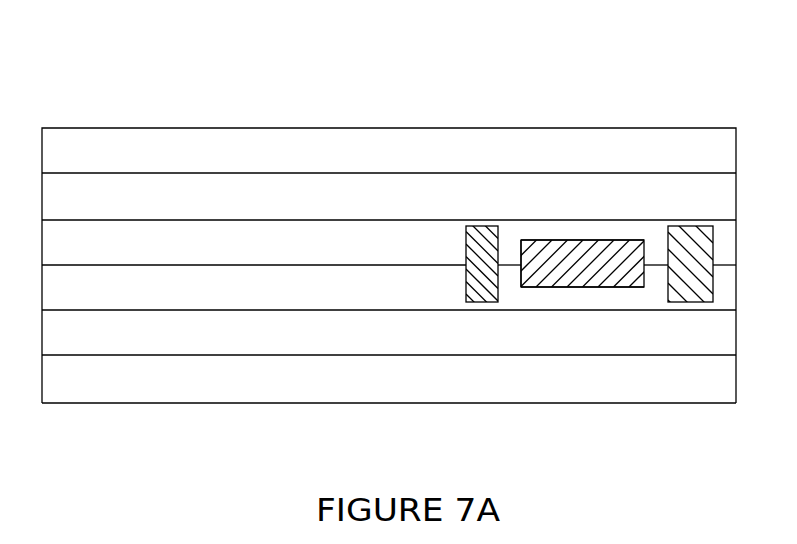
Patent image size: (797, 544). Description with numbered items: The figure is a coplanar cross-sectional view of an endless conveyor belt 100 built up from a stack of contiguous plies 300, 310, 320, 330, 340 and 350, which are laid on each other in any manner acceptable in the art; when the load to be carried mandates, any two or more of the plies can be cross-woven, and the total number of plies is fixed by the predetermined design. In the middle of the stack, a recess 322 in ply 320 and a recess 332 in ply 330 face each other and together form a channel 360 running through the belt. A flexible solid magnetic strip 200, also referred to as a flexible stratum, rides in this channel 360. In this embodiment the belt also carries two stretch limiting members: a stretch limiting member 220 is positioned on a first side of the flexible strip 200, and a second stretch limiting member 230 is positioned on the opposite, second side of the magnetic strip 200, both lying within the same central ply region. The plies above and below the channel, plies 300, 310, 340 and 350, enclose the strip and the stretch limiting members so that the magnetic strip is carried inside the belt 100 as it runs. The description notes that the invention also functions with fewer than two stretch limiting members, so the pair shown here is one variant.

The endless belt 100 is at (389, 238).
The flexible solid magnetic strip 200 is at (575, 346).
The stretch limiting member 220 is at (434, 323).
The stretch limiting member 230 is at (703, 339).
The ply 300 is at (374, 124).
The ply 310 is at (389, 132).
The ply 320 is at (389, 139).
The recess 322 is at (611, 157).
The ply 330 is at (389, 405).
The recess 332 is at (616, 370).
The ply 340 is at (389, 408).
The ply 350 is at (376, 416).
The channel 360 is at (540, 180).